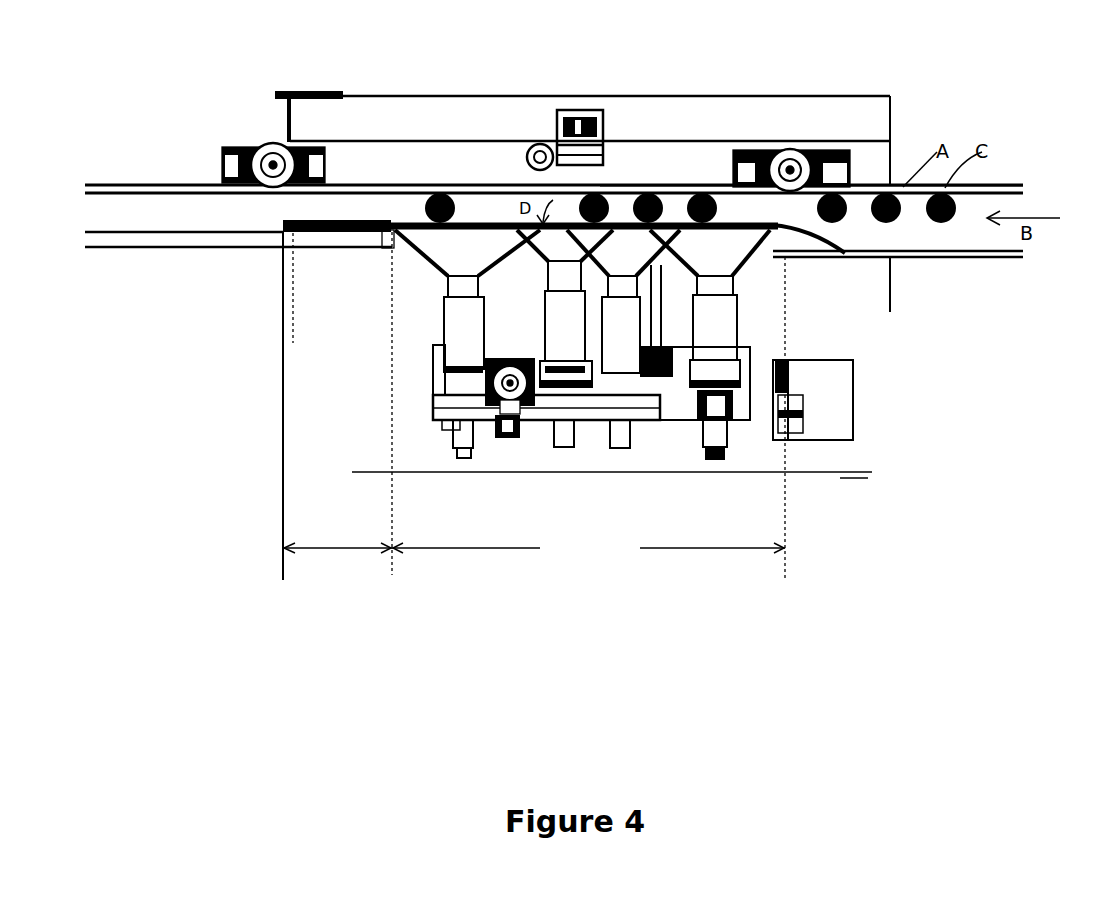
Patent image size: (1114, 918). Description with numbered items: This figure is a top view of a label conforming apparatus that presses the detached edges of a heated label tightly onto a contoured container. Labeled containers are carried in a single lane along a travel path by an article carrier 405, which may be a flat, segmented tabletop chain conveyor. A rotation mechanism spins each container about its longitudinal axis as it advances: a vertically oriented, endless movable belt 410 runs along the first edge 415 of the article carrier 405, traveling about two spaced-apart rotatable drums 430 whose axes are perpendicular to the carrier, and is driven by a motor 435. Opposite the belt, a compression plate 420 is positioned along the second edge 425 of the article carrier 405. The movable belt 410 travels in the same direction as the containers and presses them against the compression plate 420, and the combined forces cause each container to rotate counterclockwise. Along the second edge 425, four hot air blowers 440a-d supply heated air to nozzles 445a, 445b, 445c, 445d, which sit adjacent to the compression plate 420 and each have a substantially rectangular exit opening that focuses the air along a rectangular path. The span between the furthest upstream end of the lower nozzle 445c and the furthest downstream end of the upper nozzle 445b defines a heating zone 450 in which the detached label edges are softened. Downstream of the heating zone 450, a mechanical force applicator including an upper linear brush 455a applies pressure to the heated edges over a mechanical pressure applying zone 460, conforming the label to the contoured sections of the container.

The article carrier 405 is at (948, 242).
The movable belt 410 is at (470, 183).
The first edge 415 is at (985, 186).
The compression plate 420 is at (813, 242).
The second edge 425 is at (925, 262).
The rotatable drums 430 is at (262, 145).
The motor 435 is at (590, 117).
The hot air blowers 440a-d is at (473, 448).
The nozzle 445a is at (623, 253).
The upper nozzle 445b is at (461, 253).
The lower nozzle 445c is at (710, 253).
The nozzle 445d is at (551, 262).
The heating zone 450 is at (588, 550).
The upper linear brush 455a is at (315, 224).
The mechanical pressure applying zone 460 is at (337, 538).